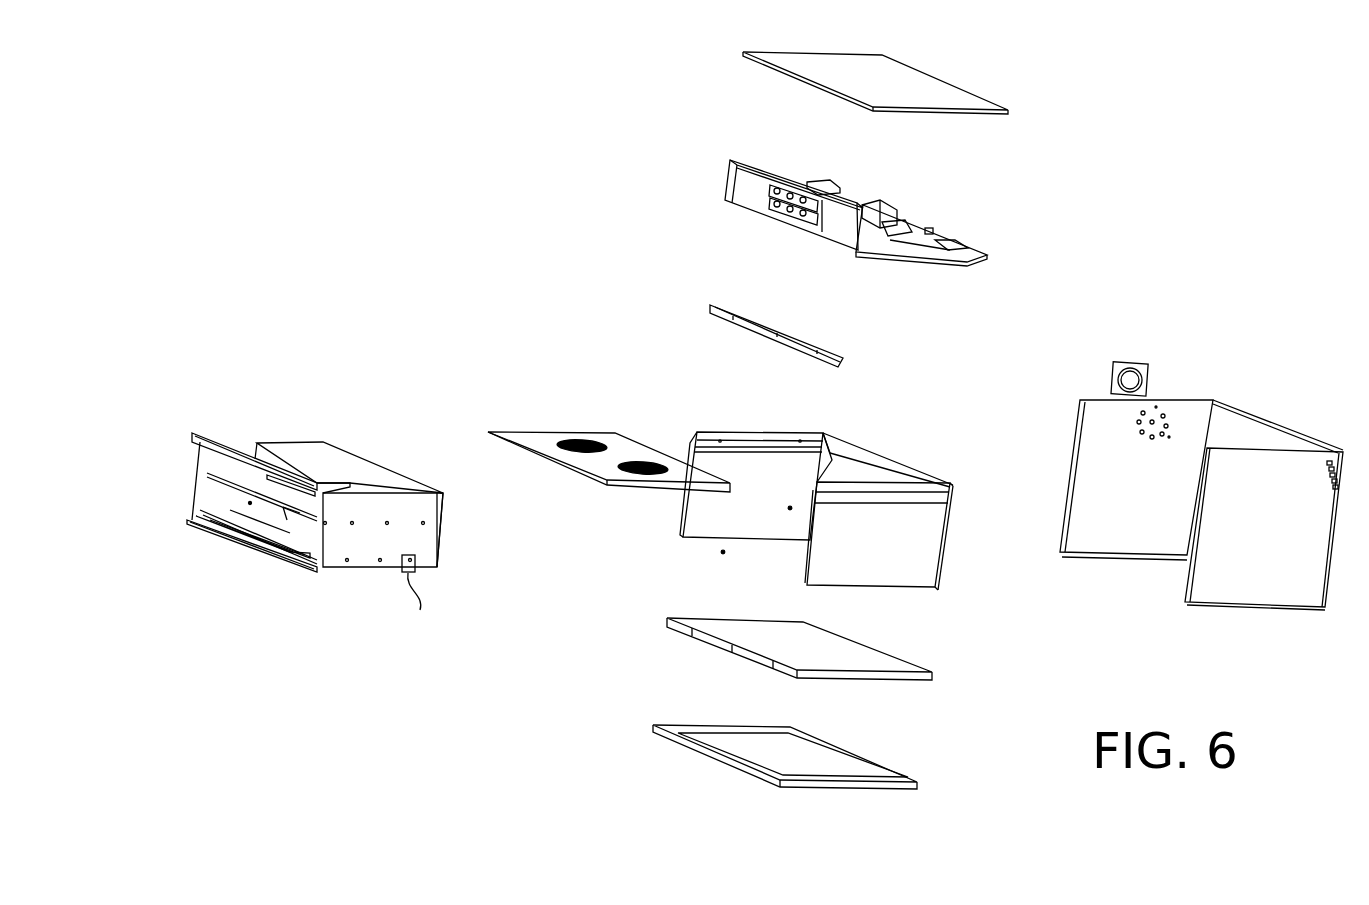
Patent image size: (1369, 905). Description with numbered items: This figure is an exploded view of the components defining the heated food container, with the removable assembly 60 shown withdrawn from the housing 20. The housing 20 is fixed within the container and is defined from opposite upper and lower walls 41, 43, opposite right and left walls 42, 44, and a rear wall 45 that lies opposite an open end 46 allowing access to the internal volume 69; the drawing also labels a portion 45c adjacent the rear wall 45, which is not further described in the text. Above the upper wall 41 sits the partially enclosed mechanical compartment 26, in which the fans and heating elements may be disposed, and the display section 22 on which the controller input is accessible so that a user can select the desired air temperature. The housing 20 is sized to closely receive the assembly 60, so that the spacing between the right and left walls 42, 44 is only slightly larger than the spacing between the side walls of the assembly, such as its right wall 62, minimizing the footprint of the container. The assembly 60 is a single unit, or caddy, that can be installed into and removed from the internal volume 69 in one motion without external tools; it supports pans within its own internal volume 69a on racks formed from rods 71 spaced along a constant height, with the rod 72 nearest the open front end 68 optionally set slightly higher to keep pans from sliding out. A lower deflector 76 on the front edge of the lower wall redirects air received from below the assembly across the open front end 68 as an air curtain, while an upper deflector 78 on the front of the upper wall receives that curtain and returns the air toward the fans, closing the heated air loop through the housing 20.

The housing 20 is at (927, 477).
The display section 22 is at (793, 197).
The mechanical compartment 26 is at (903, 222).
The upper wall 41 is at (617, 437).
The right wall 42 is at (898, 567).
The lower wall 43 is at (870, 660).
The left wall 44 is at (757, 480).
The rear wall 45 is at (857, 472).
The corner flange 45c is at (832, 472).
The open end 46 is at (723, 552).
The internal volume 69 is at (790, 508).
The assembly 60 is at (335, 462).
The right wall 62 is at (365, 550).
The open front end 68 is at (203, 493).
The internal volume 69a is at (250, 503).
The rods 71 is at (253, 482).
The rod 72 is at (213, 482).
The lower deflector 76 is at (237, 537).
The upper deflector 78 is at (277, 457).